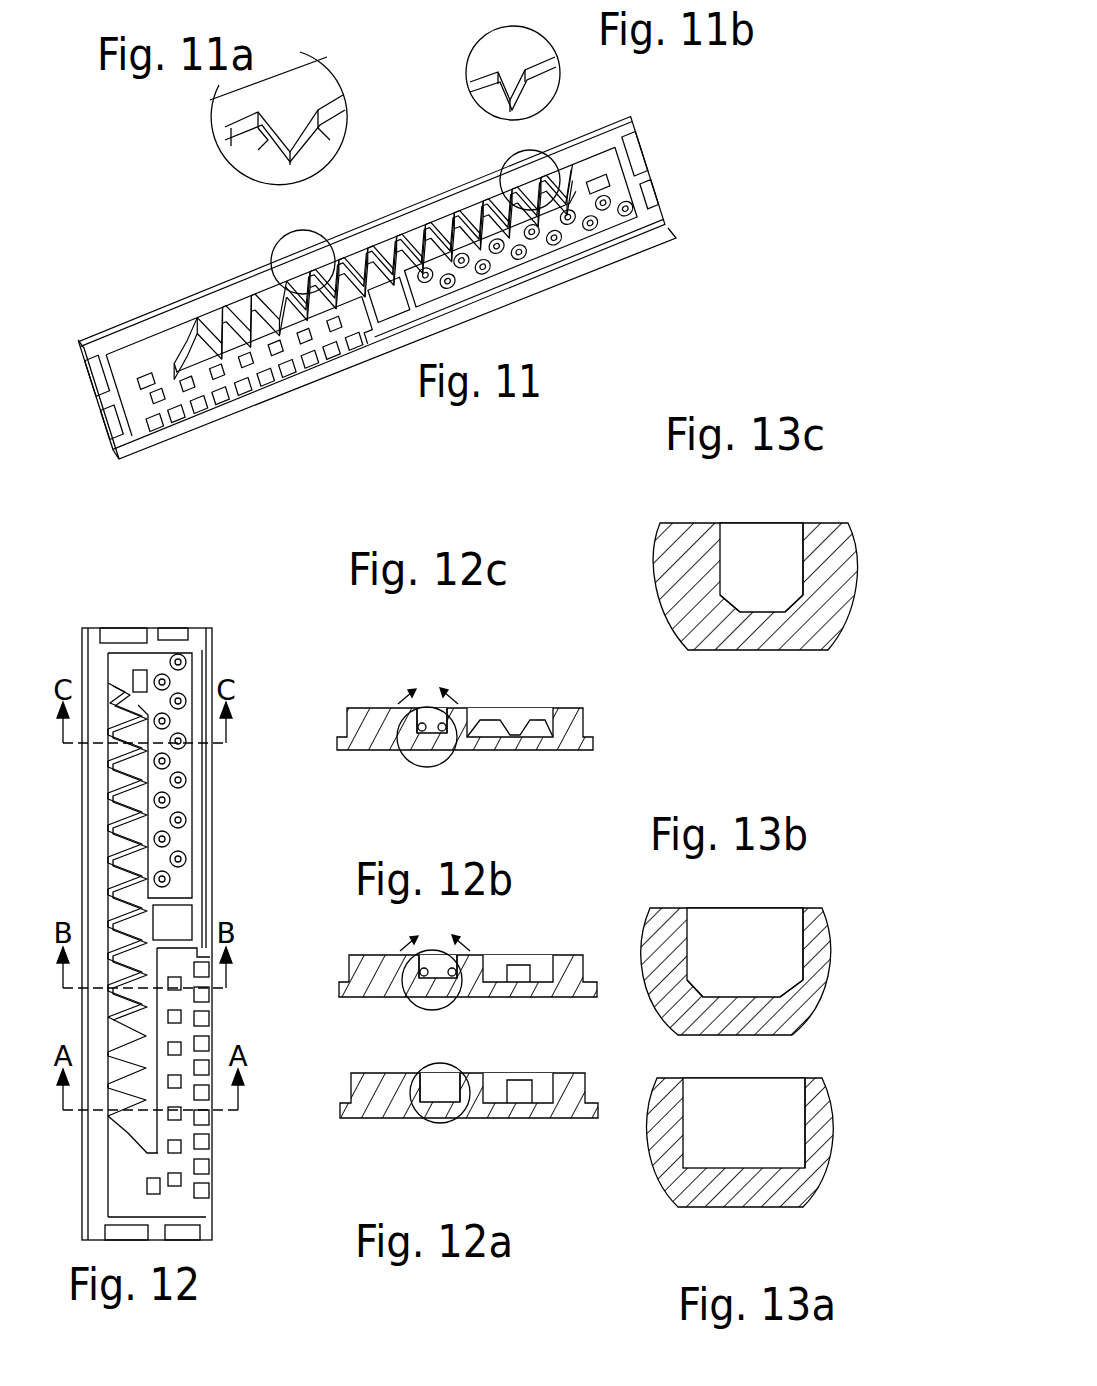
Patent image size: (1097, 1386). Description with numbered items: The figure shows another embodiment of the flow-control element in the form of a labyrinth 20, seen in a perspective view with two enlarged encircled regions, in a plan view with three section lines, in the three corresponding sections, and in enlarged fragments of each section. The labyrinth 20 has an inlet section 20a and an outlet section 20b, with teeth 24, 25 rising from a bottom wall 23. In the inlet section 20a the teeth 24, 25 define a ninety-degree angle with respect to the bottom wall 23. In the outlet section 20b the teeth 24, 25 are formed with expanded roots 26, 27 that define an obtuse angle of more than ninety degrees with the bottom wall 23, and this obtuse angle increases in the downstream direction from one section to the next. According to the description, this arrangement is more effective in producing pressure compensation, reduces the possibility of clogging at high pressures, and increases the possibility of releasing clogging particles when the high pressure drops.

In FIG. 11, the labyrinth 20 is at (377, 287).
In FIG. 12, the labyrinth 20 is at (116, 934).
In FIG. 11, the inlet section 20a is at (270, 282).
In FIG. 12, the inlet section 20a is at (105, 1047).
In FIG. 11, the outlet section 20b is at (482, 202).
In FIG. 12, the outlet section 20b is at (112, 781).
In FIG. 12C, the bottom wall 23 is at (427, 752).
In FIG. 12B, the bottom wall 23 is at (432, 998).
In FIG. 12A, the bottom wall 23 is at (445, 1120).
In FIG. 13C, the bottom wall 23 is at (742, 642).
In FIG. 13B, the bottom wall 23 is at (748, 1025).
In FIG. 13A, the bottom wall 23 is at (712, 1198).
In FIG. 12C, the tooth 24 is at (392, 716).
In FIG. 12B, the tooth 24 is at (375, 962).
In FIG. 12A, the tooth 24 is at (410, 1068).
In FIG. 13C, the tooth 24 is at (664, 542).
In FIG. 13B, the tooth 24 is at (662, 920).
In FIG. 13A, the tooth 24 is at (668, 1090).
In FIG. 12C, the tooth 25 is at (468, 740).
In FIG. 12B, the tooth 25 is at (480, 985).
In FIG. 12A, the tooth 25 is at (470, 1072).
In FIG. 13C, the tooth 25 is at (832, 523).
In FIG. 13B, the tooth 25 is at (818, 912).
In FIG. 13A, the tooth 25 is at (822, 1095).
In FIG. 12C, the expanded root 26 is at (417, 727).
In FIG. 12B, the expanded root 26 is at (420, 972).
In FIG. 13C, the expanded root 26 is at (738, 597).
In FIG. 13B, the expanded root 26 is at (706, 985).
In FIG. 12C, the expanded root 27 is at (445, 727).
In FIG. 12B, the expanded root 27 is at (455, 972).
In FIG. 13C, the expanded root 27 is at (782, 597).
In FIG. 13B, the expanded root 27 is at (780, 985).